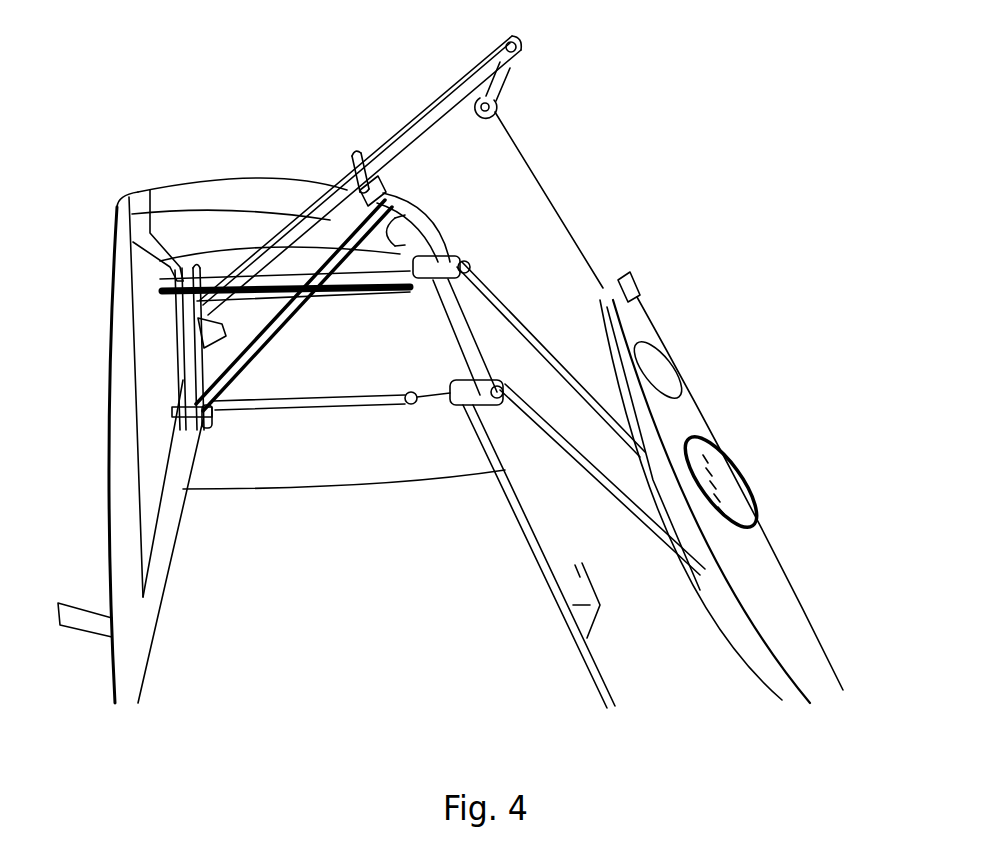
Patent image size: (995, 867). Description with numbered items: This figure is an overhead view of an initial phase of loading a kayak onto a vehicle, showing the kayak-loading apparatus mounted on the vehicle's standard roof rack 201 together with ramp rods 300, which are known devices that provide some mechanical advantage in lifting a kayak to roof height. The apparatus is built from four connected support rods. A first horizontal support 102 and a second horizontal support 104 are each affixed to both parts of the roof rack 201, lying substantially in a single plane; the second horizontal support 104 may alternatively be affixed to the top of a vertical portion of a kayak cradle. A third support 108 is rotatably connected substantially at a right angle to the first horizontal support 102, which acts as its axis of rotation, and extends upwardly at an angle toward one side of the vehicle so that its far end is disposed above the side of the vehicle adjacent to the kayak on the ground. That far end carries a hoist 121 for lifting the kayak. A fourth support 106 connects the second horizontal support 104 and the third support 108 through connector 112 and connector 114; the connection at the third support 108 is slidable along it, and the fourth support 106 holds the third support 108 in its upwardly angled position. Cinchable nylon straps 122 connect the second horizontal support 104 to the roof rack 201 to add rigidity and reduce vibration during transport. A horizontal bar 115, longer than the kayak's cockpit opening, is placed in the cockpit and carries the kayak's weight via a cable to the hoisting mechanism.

The first horizontal support 102 is at (262, 420).
The second horizontal support 104 is at (350, 153).
The fourth support 106 is at (382, 191).
The third support 108 is at (447, 84).
The connector 112 is at (392, 230).
The connector 114 is at (327, 187).
The horizontal bar 115 is at (718, 489).
The hoist 121 is at (500, 103).
The nylon straps 122 is at (272, 357).
The roof rack 201 is at (310, 413).
The ramp rods 300 is at (553, 345).